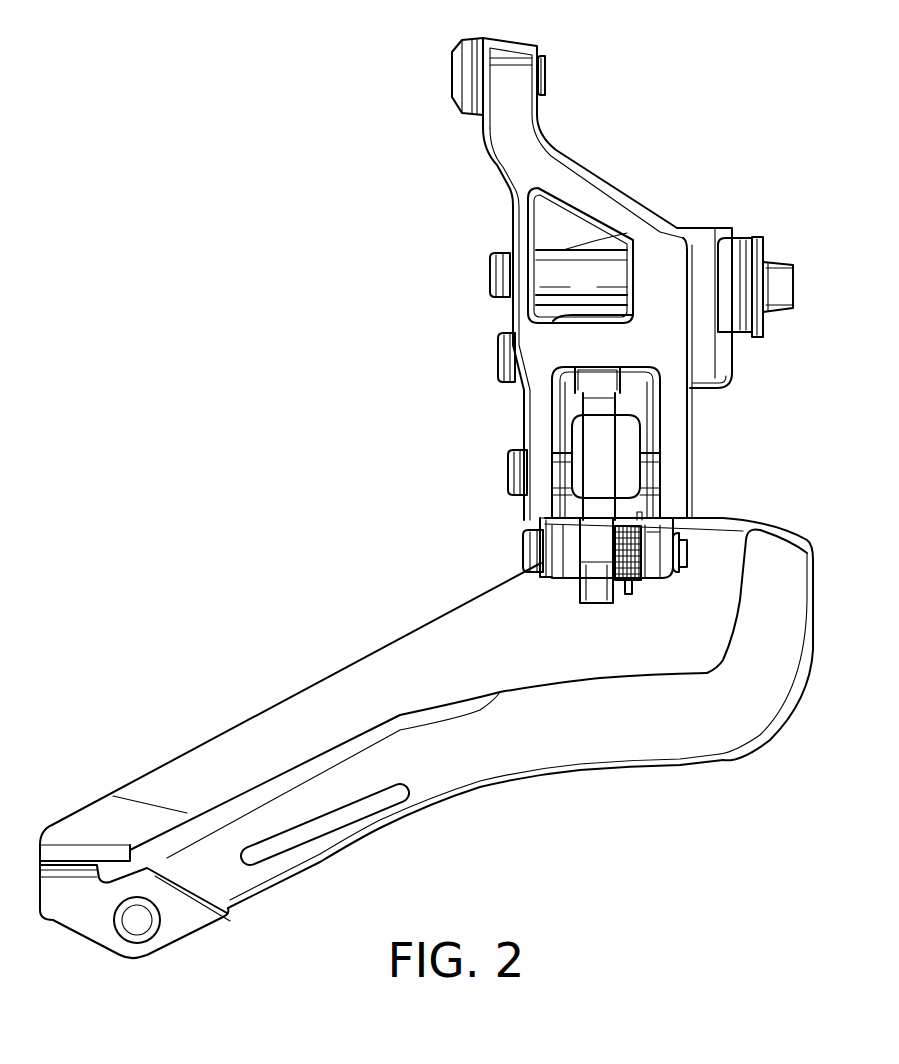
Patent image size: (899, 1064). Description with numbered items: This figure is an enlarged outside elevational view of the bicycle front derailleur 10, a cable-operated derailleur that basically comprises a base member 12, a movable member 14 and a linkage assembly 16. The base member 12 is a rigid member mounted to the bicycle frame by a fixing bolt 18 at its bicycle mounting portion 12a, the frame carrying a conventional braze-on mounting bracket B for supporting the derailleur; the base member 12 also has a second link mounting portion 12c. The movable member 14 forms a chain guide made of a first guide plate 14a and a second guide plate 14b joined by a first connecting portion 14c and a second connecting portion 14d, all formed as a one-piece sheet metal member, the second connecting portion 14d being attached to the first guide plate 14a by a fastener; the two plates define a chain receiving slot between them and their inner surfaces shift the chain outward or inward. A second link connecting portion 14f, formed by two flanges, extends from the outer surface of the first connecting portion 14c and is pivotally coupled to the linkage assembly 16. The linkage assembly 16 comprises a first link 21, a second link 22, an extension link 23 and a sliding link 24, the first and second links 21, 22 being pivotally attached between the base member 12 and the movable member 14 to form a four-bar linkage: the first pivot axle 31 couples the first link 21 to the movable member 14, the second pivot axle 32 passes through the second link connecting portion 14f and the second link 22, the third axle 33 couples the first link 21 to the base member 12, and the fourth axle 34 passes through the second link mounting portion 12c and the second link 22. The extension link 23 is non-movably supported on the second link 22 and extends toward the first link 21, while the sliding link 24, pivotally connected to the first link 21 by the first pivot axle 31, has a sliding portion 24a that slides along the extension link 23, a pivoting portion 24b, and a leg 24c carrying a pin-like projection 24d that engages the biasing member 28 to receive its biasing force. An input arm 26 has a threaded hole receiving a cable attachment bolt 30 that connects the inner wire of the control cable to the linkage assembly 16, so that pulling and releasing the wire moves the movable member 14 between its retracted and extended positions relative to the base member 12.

The bicycle front derailleur 10 is at (436, 518).
The base member 12 is at (755, 322).
The bicycle mounting portion 12a is at (728, 230).
The second link mounting portion 12c is at (555, 248).
The movable member 14 is at (430, 735).
The first guide plate 14a is at (542, 738).
The second guide plate 14b is at (250, 750).
The first connecting portion 14c is at (750, 535).
The second connecting portion 14d is at (80, 863).
The second link connecting portion 14f is at (557, 522).
The linkage assembly 16 is at (618, 434).
The fixing bolt 18 is at (780, 260).
The first link 21 is at (665, 433).
The second link 22 is at (521, 269).
The extension link 23 is at (581, 405).
The sliding link 24 is at (572, 414).
The sliding portion 24a is at (602, 380).
The pivoting portion 24b is at (598, 570).
The leg 24c is at (580, 597).
The projection 24d is at (630, 596).
The input arm 26 is at (521, 63).
The biasing member 28 is at (632, 570).
The cable attachment bolt 30 is at (450, 73).
The first pivot axle 31 is at (523, 553).
The second pivot axle 32 is at (508, 466).
The third axle 33 is at (498, 357).
The fourth axle 34 is at (488, 265).
The braze-on mounting bracket B is at (758, 237).